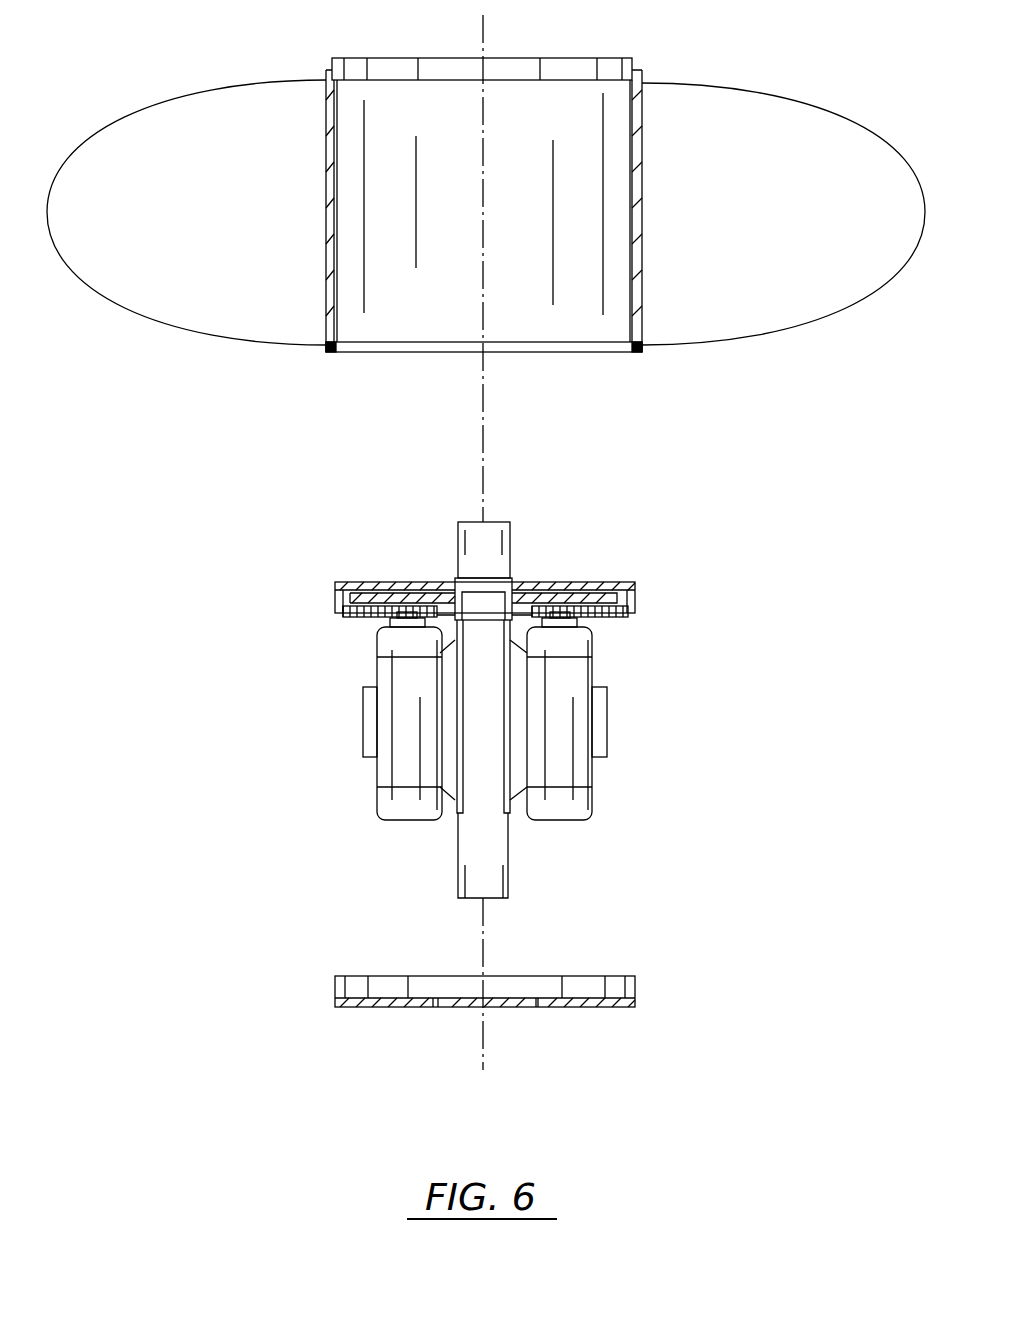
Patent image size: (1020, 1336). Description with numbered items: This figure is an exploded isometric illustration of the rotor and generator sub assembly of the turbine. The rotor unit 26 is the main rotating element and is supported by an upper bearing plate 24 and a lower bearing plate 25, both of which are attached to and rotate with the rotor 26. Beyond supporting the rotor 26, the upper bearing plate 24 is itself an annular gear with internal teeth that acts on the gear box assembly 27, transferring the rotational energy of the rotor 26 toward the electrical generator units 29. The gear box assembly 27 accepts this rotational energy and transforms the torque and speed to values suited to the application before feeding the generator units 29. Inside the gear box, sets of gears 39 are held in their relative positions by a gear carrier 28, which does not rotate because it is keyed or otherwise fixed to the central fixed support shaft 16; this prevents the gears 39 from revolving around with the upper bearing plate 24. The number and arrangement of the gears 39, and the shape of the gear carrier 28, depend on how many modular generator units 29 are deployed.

The central fixed support shaft 16 is at (498, 847).
The upper bearing plate 24 is at (418, 580).
The lower bearing plate 25 is at (632, 977).
The rotor unit 26 is at (657, 68).
The gear box assembly 27 is at (637, 627).
The gear carrier 28 is at (365, 598).
The electrical generator unit 29 is at (385, 810).
The gear box gears 39 is at (602, 620).